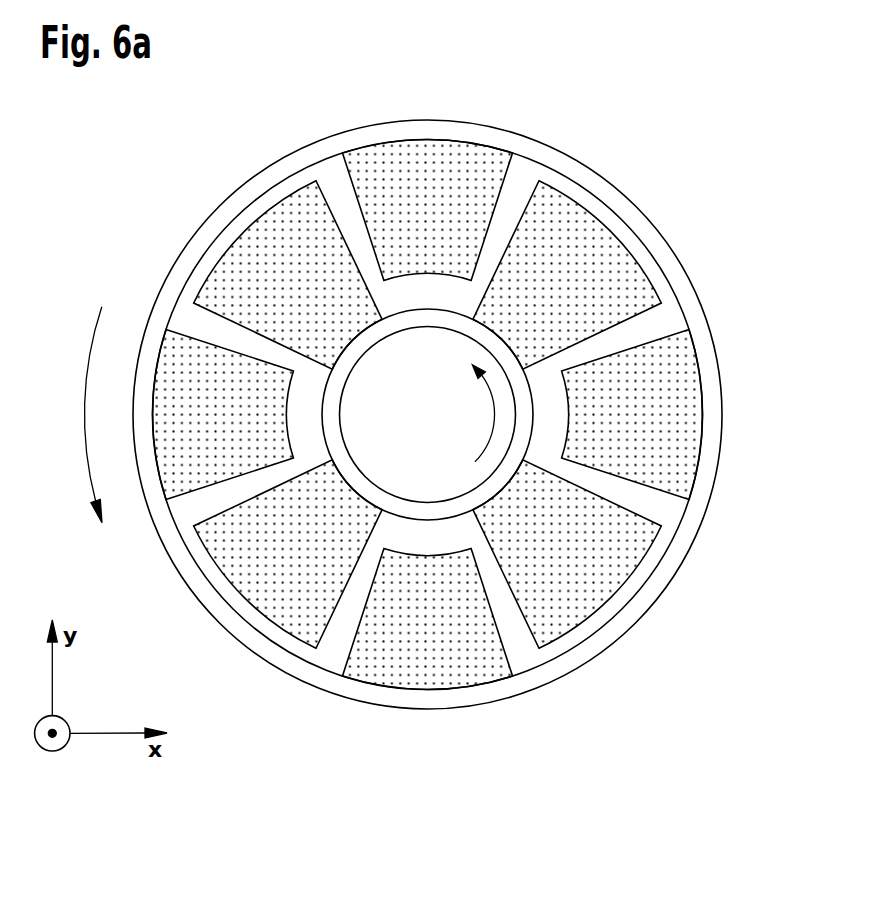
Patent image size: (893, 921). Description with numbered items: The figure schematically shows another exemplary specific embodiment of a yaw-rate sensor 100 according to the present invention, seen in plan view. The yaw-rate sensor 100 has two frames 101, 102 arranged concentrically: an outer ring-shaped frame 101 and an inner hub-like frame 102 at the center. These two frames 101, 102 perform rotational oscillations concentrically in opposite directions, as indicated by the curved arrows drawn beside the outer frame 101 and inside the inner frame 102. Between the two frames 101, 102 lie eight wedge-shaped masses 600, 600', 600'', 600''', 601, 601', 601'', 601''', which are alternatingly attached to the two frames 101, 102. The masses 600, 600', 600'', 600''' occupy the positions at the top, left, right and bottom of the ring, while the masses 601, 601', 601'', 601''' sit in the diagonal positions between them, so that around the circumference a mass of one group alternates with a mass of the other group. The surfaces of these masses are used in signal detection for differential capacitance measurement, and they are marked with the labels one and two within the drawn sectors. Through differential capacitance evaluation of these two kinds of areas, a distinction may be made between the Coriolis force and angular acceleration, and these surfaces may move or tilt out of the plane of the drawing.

The yaw-rate sensor 100 is at (422, 85).
The frame 101 is at (319, 150).
The frame 102 is at (455, 322).
The mass 600 is at (677, 415).
The mass 600' is at (437, 174).
The mass 600'' is at (192, 375).
The mass 600''' is at (441, 656).
The mass 601 is at (589, 269).
The mass 601' is at (266, 270).
The mass 601'' is at (288, 587).
The mass 601''' is at (596, 560).